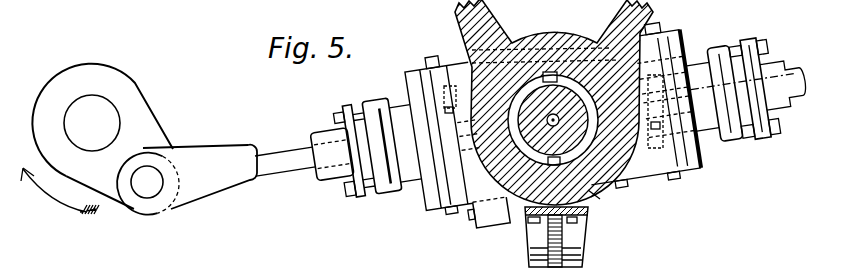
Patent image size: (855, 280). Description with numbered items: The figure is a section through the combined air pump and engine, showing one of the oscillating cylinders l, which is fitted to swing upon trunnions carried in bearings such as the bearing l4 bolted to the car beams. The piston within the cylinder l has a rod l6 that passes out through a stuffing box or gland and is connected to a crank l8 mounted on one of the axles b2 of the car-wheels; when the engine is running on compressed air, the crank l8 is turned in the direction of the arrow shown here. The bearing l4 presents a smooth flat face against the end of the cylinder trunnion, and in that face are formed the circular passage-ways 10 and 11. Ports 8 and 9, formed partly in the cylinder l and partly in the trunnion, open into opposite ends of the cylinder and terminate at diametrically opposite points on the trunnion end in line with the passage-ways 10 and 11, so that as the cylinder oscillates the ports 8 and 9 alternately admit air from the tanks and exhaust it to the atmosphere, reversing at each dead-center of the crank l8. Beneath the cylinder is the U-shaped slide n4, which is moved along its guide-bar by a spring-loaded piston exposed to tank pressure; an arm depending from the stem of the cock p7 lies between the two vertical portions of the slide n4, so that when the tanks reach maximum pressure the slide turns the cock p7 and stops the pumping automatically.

The axle b2 is at (92, 123).
The crank l8 is at (102, 136).
The piston rod l6 is at (287, 166).
The cylinder l is at (421, 70).
The port 9 is at (455, 85).
The passage-way 11 is at (528, 62).
The bearing l4 is at (558, 55).
The passage-way 10 is at (573, 85).
The port 8 is at (592, 199).
The U-shaped slide n4 is at (590, 208).
The cock p7 is at (491, 222).